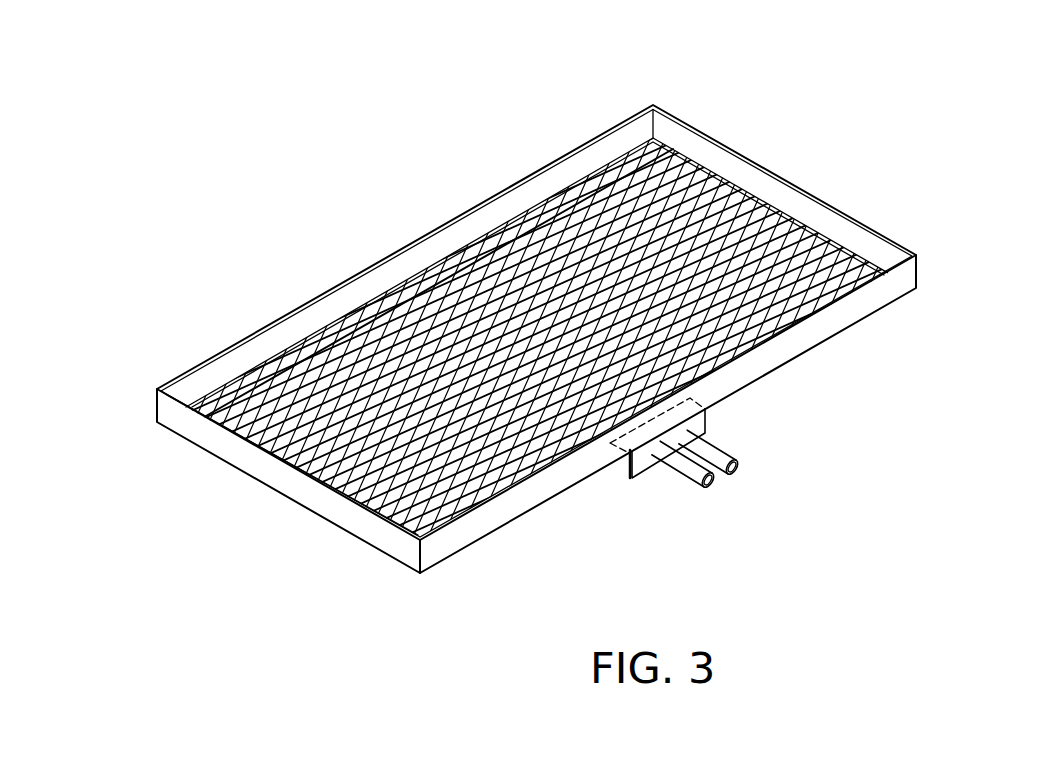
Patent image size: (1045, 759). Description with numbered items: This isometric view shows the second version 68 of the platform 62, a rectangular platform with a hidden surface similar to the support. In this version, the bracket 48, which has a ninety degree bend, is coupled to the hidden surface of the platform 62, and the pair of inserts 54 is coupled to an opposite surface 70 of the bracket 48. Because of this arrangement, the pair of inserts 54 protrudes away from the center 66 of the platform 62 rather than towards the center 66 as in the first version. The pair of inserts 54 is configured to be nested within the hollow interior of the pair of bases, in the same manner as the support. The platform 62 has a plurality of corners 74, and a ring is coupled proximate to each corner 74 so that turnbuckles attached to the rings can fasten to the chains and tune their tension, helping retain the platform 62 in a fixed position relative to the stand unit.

The bracket 48 is at (710, 426).
The pair of inserts 54 is at (742, 462).
The platform 62 is at (447, 258).
The center 66 is at (535, 228).
The second version 68 is at (845, 141).
The opposite surface 70 is at (640, 462).
The corner 74 is at (653, 105).